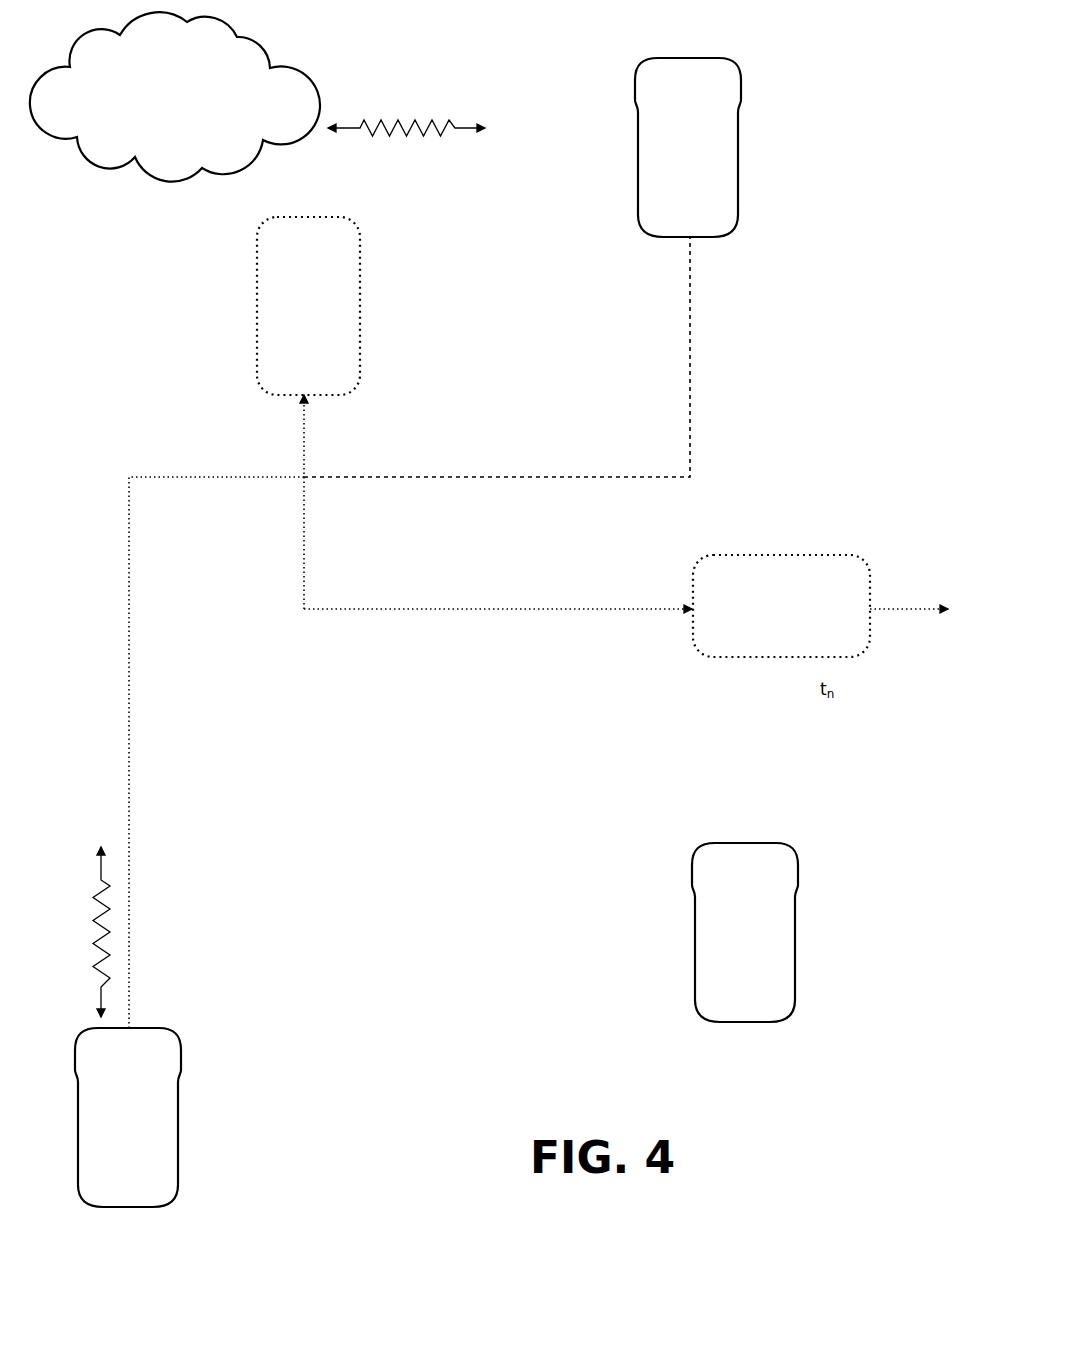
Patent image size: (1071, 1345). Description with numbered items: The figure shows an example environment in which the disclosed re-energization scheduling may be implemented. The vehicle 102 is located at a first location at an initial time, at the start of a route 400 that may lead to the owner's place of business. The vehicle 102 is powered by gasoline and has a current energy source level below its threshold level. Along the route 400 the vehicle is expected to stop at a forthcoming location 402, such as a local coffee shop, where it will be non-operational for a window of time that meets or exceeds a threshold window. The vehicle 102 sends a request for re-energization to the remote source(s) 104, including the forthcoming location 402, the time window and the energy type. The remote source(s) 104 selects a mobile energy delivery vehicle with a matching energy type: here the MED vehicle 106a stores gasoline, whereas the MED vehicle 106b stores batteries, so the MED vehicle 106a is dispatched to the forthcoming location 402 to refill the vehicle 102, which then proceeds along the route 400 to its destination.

The remote source(s) 104 is at (273, 52).
The MED vehicle 106a is at (741, 145).
The MED vehicle 106b is at (798, 930).
The vehicle 102 is at (181, 1123).
The route 400 is at (304, 438).
The forthcoming location 402 is at (360, 312).